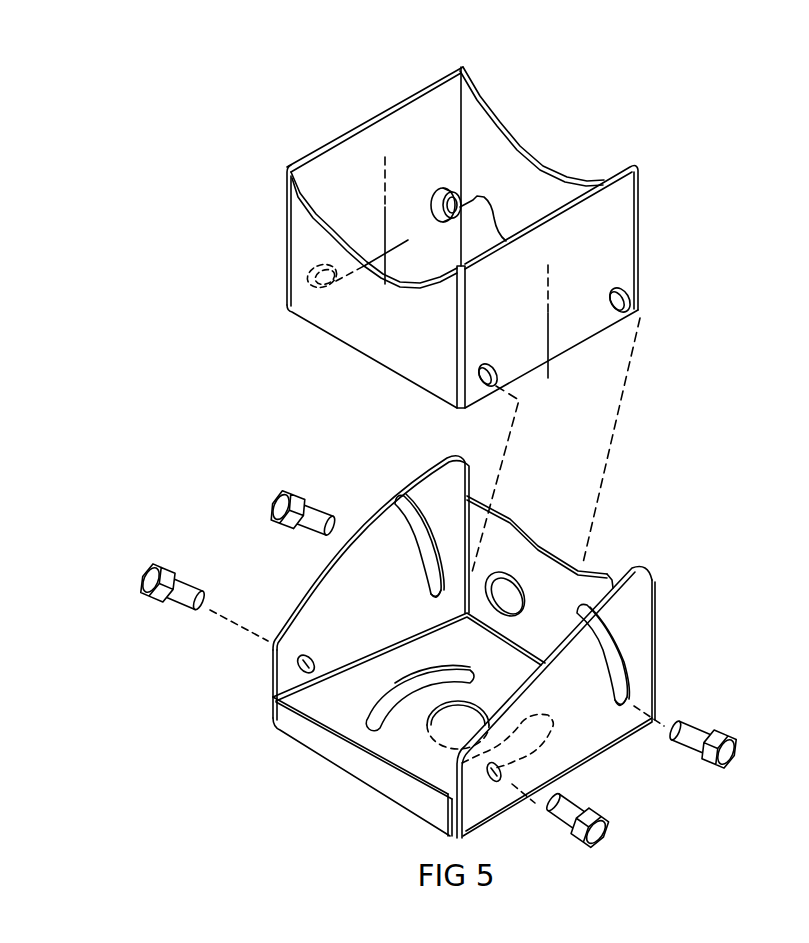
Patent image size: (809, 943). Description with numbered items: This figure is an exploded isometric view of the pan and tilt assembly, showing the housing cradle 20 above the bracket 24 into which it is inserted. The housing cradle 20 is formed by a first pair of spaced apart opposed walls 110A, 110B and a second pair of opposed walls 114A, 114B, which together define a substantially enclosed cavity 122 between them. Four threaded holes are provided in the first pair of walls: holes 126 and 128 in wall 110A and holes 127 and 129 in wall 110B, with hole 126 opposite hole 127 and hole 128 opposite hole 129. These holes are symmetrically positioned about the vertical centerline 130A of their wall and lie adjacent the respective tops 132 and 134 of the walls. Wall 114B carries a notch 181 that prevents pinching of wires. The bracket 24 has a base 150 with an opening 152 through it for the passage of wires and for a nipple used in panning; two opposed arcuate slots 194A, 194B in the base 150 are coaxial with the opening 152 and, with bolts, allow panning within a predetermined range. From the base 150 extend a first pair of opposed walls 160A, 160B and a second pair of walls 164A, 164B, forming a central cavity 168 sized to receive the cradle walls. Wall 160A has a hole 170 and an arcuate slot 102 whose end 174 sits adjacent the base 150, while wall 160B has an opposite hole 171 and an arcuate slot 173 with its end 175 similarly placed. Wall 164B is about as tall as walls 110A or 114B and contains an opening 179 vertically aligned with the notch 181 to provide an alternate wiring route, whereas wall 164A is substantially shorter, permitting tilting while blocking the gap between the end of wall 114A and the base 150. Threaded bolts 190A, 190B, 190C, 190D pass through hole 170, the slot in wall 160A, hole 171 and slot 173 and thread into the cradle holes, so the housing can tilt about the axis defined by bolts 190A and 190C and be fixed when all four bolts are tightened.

The housing cradle 20 is at (285, 194).
The wall 110A is at (622, 220).
The wall 110B is at (313, 150).
The wall 114A is at (378, 337).
The wall 114B is at (503, 123).
The cavity 122 is at (385, 157).
The threaded hole 126 is at (630, 298).
The threaded hole 127 is at (443, 187).
The threaded hole 128 is at (480, 388).
The threaded hole 129 is at (307, 273).
The vertical centerline 130A is at (552, 273).
The top of wall 132 is at (568, 342).
The top of wall 134 is at (308, 300).
The notch 181 is at (492, 199).
The bracket 24 is at (655, 615).
The arcuate slot 102 is at (628, 667).
The base 150 is at (345, 707).
The base opening 152 is at (428, 725).
The wall 160A is at (638, 635).
The wall 160B is at (312, 585).
The wall 164A is at (383, 777).
The wall 164B is at (567, 557).
The central cavity 168 is at (562, 590).
The hole 170 is at (499, 780).
The hole 171 is at (298, 668).
The arcuate slot 173 is at (395, 490).
The end of slot 174 is at (632, 697).
The slot end 175 is at (445, 596).
The opening 179 is at (506, 572).
The threaded bolt 190A is at (606, 835).
The threaded bolt 190B is at (737, 758).
The threaded bolt 190C is at (145, 572).
The threaded bolt 190D is at (272, 495).
The arcuate slot 194A is at (418, 675).
The arcuate slot 194B is at (540, 750).